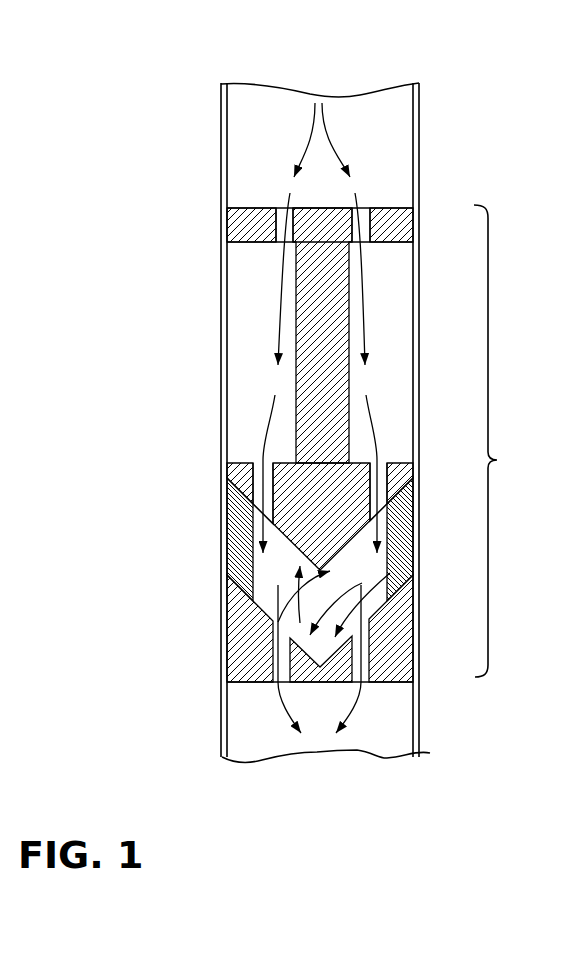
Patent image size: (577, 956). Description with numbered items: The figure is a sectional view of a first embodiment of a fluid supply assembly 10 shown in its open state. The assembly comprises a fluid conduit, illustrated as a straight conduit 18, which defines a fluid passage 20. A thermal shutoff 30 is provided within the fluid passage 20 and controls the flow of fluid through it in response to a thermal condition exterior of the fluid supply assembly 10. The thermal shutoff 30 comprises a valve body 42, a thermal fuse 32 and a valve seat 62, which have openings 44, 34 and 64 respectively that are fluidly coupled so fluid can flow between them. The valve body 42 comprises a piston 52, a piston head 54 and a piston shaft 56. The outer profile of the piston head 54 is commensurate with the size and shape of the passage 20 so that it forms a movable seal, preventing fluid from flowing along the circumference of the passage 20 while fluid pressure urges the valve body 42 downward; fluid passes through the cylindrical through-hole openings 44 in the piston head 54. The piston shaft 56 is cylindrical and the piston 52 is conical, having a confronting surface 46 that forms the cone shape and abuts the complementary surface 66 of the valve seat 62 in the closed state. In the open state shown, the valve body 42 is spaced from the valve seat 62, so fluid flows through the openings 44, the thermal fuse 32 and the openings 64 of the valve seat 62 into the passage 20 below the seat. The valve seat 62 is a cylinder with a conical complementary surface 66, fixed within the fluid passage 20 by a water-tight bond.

The fluid supply assembly 10 is at (410, 66).
The straight conduit 18 is at (221, 130).
The fluid passage 20 is at (380, 153).
The thermal shutoff 30 is at (501, 441).
The thermal fuse 32 is at (236, 533).
The openings 34 is at (262, 572).
The valve body 42 is at (306, 331).
The openings 44 is at (280, 207).
The confronting surface 46 is at (282, 622).
The piston 52 is at (290, 460).
The piston head 54 is at (312, 238).
The piston shaft 56 is at (310, 298).
The valve seat 62 is at (248, 660).
The openings 64 is at (273, 681).
The complementary surface 66 is at (340, 602).